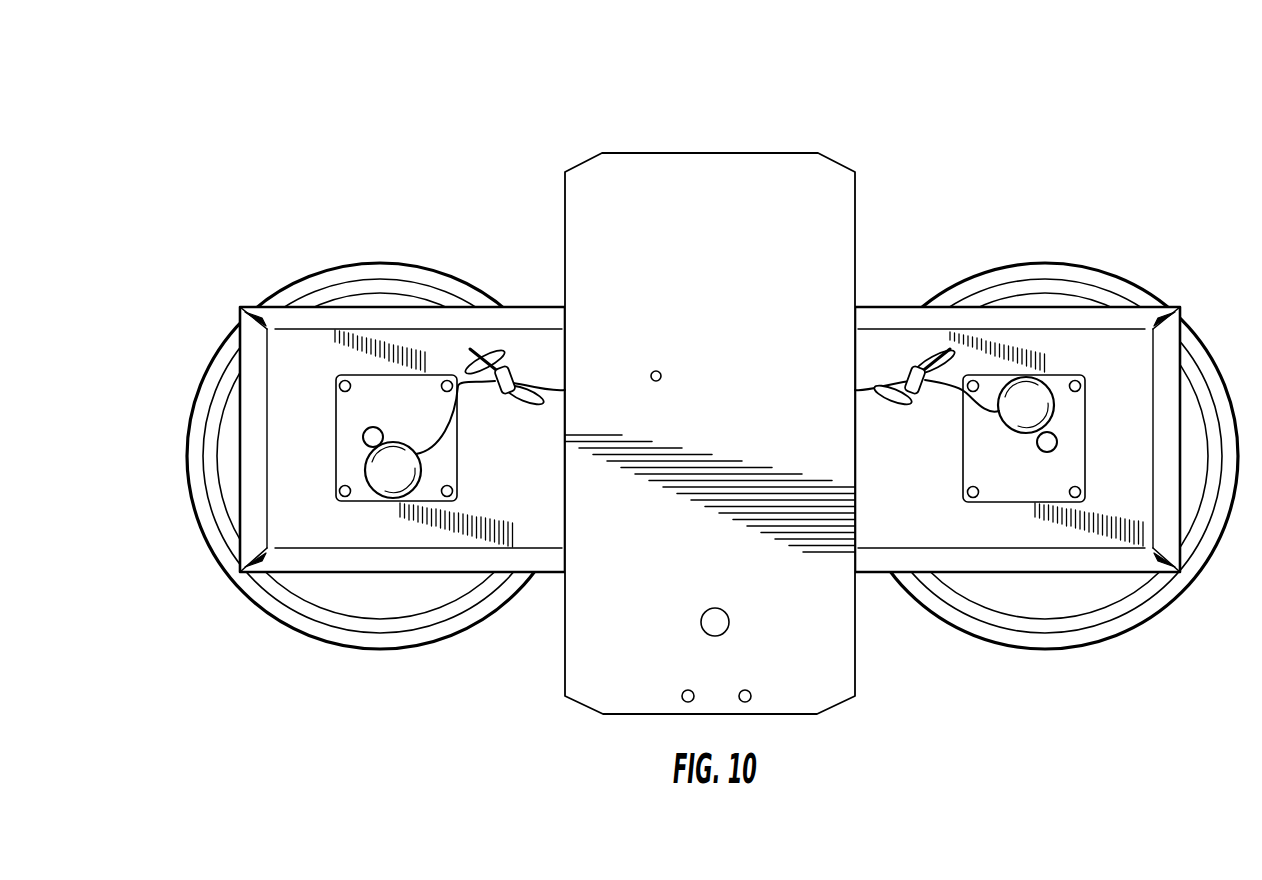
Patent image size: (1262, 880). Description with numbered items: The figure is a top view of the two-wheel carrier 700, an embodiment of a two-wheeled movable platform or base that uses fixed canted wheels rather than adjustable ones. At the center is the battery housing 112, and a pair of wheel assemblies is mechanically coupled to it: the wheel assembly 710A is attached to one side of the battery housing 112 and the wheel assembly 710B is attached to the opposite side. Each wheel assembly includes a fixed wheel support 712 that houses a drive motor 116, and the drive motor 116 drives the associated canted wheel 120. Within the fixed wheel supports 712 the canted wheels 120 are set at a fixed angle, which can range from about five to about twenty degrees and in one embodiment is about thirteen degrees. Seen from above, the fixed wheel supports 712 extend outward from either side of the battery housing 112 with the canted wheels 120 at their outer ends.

The two-wheel carrier 700 is at (476, 73).
The wheel assembly 710A is at (1110, 236).
The wheel assembly 710B is at (312, 238).
The fixed wheel support 712 is at (908, 303).
The drive motor 116 is at (1027, 377).
The canted wheel 120 is at (385, 648).
The battery housing 112 is at (795, 715).